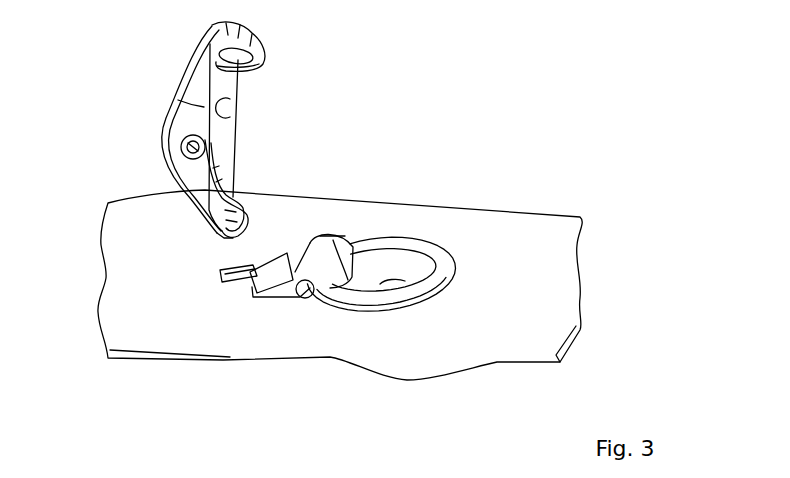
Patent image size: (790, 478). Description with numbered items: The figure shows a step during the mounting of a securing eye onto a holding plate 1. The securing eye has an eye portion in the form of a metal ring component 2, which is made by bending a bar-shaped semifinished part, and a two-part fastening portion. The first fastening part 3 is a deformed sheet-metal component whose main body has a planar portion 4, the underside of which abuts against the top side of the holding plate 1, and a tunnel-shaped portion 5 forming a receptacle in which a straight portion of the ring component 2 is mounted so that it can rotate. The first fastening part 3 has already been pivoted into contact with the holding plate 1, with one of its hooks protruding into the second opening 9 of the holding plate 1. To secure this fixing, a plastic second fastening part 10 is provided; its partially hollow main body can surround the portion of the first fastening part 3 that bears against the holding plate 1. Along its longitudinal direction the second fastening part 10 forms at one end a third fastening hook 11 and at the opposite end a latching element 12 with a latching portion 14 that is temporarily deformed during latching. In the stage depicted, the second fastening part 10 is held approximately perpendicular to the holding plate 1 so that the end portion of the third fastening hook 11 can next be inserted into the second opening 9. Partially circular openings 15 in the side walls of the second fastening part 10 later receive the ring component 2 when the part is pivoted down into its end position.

The holding plate 1 is at (120, 231).
The ring component 2 is at (393, 244).
The first fastening part 3 is at (305, 252).
The planar portion 4 is at (281, 258).
The tunnel-shaped portion 5 is at (331, 243).
The second opening 9 is at (235, 290).
The second fastening part 10 is at (188, 119).
The third fastening hook 11 is at (219, 230).
The latching element 12 is at (213, 58).
The latching portion 14 is at (270, 40).
The partially circular openings 15 is at (238, 108).